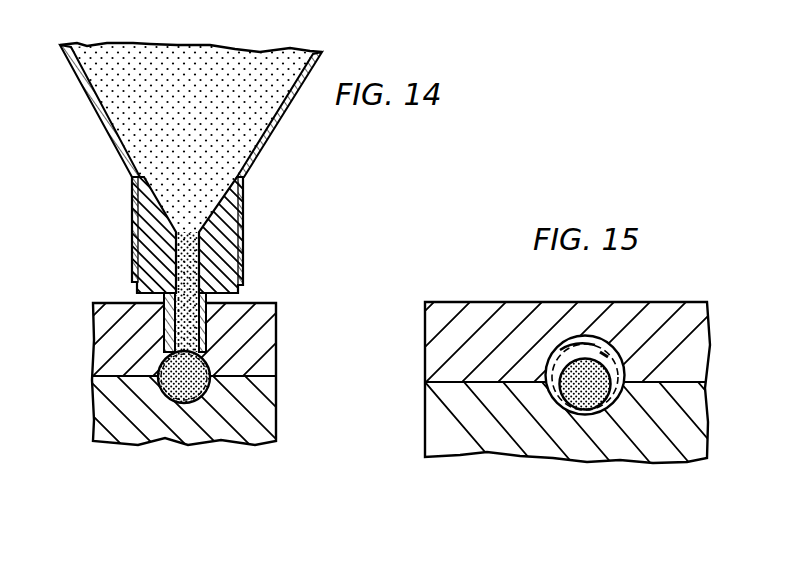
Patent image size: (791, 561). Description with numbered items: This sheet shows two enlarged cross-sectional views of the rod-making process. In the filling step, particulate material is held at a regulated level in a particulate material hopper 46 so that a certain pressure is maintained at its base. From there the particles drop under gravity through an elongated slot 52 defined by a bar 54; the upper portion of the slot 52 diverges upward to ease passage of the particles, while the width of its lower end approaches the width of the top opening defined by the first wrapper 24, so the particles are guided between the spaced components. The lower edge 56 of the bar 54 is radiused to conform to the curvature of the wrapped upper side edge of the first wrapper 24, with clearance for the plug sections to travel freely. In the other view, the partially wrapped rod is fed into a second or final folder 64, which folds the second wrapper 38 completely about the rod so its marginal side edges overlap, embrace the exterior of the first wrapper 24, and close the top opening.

In FIG. 14, the particulate material hopper 46 is at (278, 125).
In FIG. 14, the elongated slot 52 is at (196, 257).
In FIG. 14, the bar 54 is at (153, 263).
In FIG. 14, the lower edge 56 is at (207, 348).
In FIG. 14, the first wrapper 24 is at (202, 406).
In FIG. 15, the first wrapper 24 is at (570, 413).
In FIG. 15, the second or final folder 64 is at (488, 317).
In FIG. 15, the second wrapper 38 is at (615, 412).